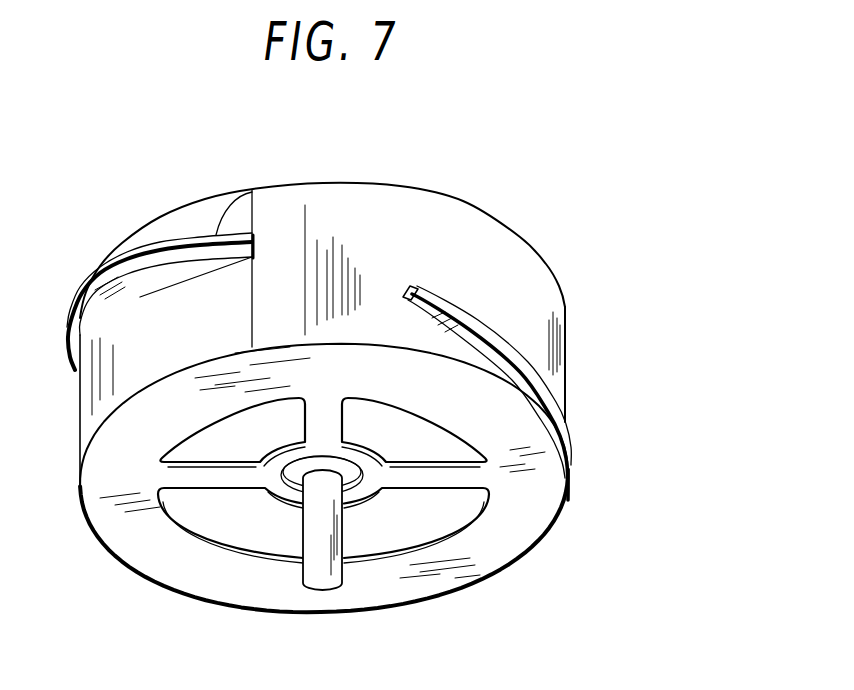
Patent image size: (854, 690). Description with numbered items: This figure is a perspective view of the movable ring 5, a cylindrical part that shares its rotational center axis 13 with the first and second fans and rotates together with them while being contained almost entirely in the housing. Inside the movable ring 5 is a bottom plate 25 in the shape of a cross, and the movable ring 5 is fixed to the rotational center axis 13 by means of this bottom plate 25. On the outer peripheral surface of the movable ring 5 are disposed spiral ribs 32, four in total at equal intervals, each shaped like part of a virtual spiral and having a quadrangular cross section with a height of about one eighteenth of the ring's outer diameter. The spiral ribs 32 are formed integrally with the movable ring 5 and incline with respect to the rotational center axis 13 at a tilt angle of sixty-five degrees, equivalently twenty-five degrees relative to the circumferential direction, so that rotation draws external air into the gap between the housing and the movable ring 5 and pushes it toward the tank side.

The movable ring 5 is at (474, 147).
The rotational center axis 13 is at (312, 565).
The bottom plate 25 is at (435, 482).
The spiral ribs 32 is at (112, 262).